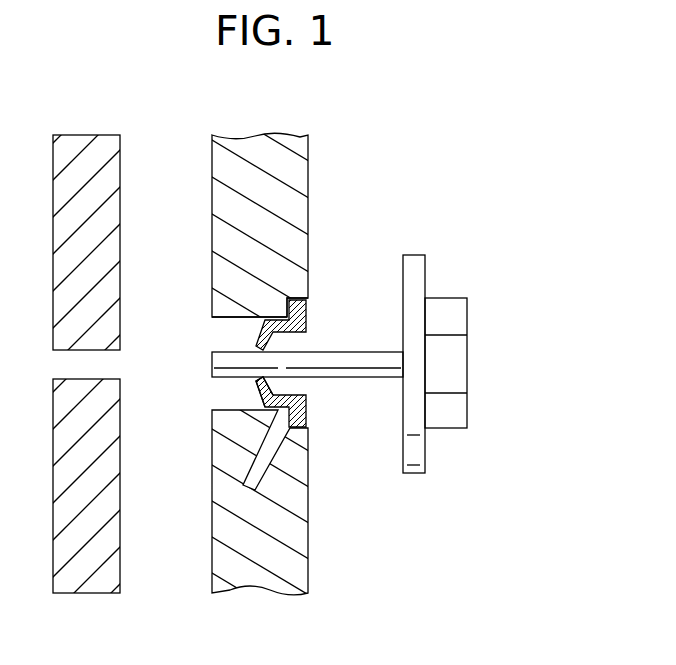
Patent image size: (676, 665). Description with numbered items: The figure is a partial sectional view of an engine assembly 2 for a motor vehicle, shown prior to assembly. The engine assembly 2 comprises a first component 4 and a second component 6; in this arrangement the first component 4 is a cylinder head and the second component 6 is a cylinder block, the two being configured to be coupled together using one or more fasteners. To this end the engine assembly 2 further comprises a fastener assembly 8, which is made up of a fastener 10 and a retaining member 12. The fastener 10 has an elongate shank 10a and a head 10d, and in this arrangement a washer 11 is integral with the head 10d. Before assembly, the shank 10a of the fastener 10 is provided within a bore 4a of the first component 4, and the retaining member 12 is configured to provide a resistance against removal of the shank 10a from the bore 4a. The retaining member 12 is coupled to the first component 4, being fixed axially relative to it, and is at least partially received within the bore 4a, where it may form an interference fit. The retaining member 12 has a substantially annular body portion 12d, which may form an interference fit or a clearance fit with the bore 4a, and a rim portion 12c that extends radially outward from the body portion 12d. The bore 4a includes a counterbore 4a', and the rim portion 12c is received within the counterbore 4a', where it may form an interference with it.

The engine assembly 2 is at (394, 112).
The first component 4 is at (308, 178).
The bore 4a is at (215, 311).
The counterbore 4a' is at (224, 269).
The second component 6 is at (120, 577).
The fastener assembly 8 is at (391, 322).
The fastener 10 is at (391, 373).
The shank 10a is at (357, 379).
The head 10d is at (491, 353).
The washer 11 is at (415, 255).
The retaining member 12 is at (312, 315).
The rim portion 12c is at (308, 423).
The body portion 12d is at (263, 405).